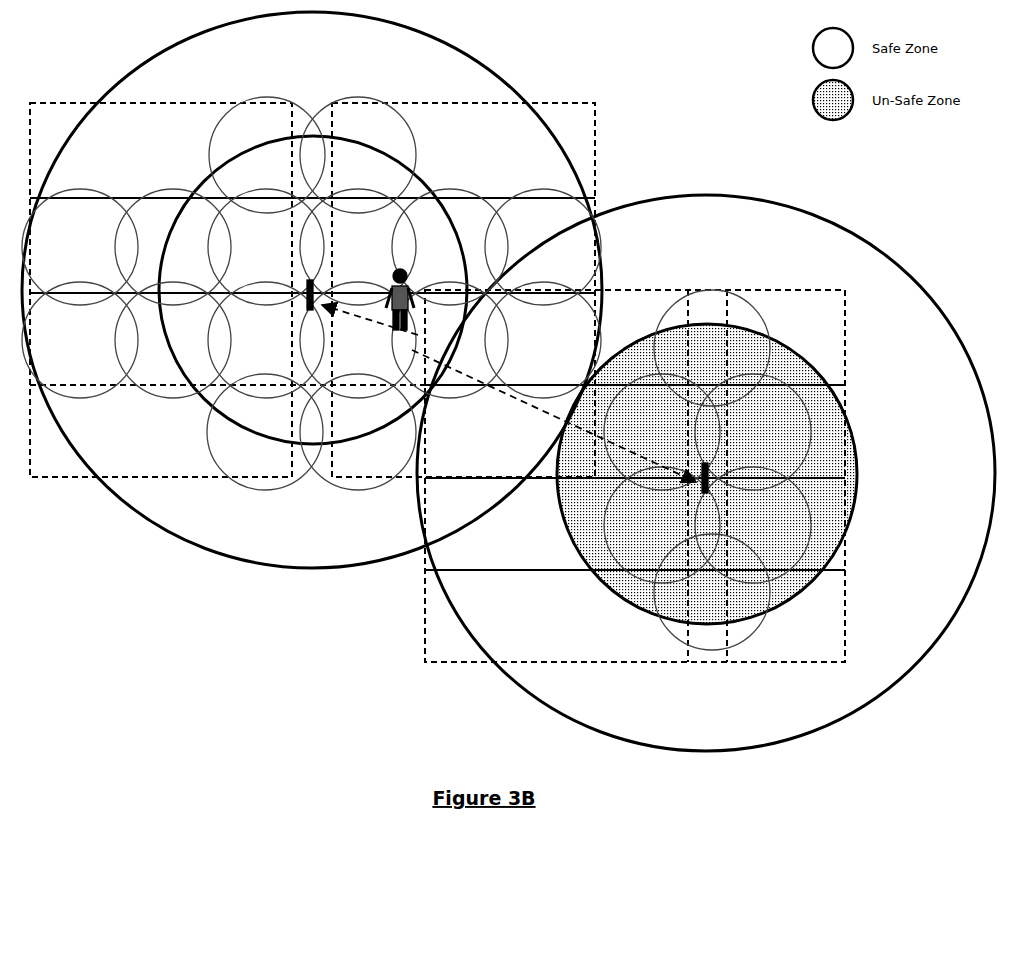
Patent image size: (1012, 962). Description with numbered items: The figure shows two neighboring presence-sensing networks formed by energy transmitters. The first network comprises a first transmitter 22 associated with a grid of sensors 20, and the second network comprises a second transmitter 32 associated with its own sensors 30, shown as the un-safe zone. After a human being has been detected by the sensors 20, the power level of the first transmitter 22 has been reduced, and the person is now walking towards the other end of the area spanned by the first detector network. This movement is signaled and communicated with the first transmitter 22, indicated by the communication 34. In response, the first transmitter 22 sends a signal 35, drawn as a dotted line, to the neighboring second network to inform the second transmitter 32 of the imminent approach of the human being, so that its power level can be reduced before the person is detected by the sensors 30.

The sensors 20 is at (371, 340).
The sensors 30 is at (707, 470).
The first transmitter Tx1 22 is at (305, 305).
The communication with the transmitter I 34 is at (418, 333).
The signal to neighboring network II 35 is at (527, 413).
The second transmitter Tx2 32 is at (700, 490).